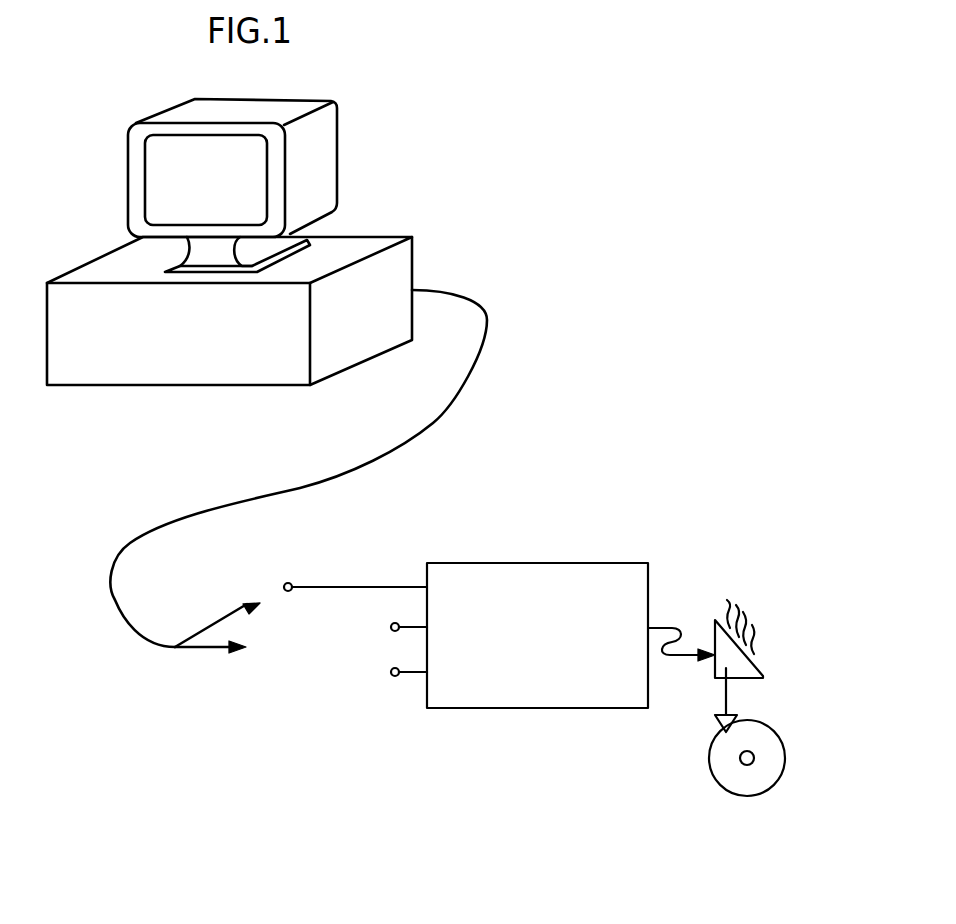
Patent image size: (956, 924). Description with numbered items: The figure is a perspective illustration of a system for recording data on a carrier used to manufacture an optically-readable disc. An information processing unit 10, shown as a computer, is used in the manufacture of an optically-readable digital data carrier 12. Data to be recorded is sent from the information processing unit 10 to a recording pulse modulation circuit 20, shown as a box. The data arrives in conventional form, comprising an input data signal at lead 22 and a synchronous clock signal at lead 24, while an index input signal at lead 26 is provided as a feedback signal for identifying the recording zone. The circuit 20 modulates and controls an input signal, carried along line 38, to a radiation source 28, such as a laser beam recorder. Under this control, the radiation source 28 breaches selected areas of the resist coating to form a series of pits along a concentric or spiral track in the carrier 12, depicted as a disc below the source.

The information processing unit 10 is at (368, 196).
The optically-readable digital data carrier 12 is at (778, 783).
The recording pulse modulation circuit 20 is at (573, 563).
The lead for input data signal 22 is at (365, 587).
The lead for synchronous clock signal 24 is at (411, 626).
The lead for index input signal 26 is at (405, 673).
The radiation source 28 is at (763, 678).
The head drive signal line 38 is at (667, 627).